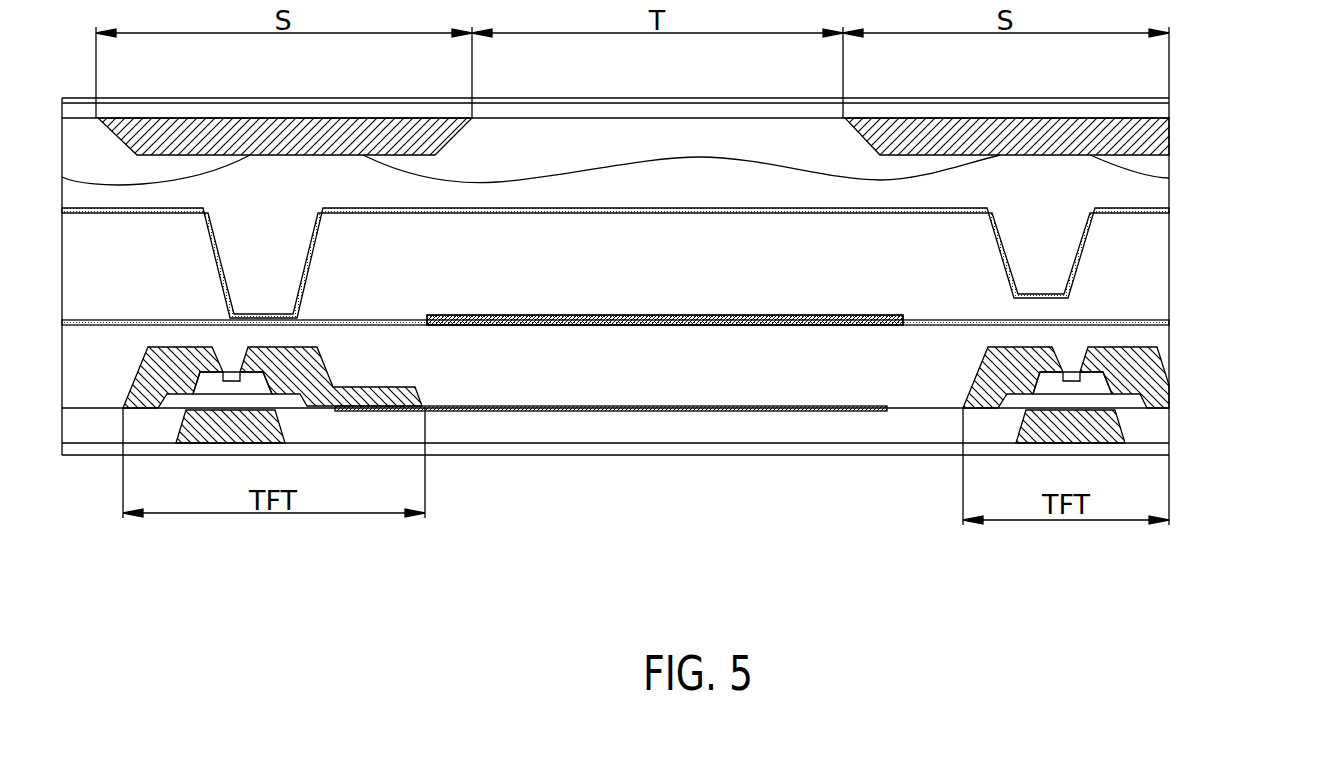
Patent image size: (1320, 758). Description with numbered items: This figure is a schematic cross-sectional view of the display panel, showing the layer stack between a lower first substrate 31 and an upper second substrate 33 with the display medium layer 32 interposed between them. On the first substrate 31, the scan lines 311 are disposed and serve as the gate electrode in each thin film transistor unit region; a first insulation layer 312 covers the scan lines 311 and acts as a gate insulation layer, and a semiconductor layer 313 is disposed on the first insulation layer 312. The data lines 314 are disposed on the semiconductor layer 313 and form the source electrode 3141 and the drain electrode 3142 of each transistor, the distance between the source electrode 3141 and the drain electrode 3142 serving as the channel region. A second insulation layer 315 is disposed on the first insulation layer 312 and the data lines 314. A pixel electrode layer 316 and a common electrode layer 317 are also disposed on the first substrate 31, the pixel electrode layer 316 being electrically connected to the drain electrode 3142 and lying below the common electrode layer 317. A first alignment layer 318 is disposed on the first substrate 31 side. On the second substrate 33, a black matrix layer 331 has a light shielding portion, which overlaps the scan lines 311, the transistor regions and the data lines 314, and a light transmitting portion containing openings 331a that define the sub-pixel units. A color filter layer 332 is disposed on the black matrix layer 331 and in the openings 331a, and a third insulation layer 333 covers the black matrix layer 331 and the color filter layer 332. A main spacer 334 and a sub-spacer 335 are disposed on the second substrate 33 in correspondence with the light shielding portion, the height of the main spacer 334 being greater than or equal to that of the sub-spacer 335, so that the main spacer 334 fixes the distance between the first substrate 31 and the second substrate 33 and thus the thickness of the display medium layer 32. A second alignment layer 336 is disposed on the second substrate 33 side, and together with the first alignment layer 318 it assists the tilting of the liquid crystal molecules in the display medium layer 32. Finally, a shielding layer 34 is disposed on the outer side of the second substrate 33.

The first substrate 31 is at (1150, 462).
The scan line 311 is at (1108, 430).
The first insulation layer 312 is at (1155, 423).
The semiconductor layer 313 is at (1097, 383).
The data line 314 is at (1254, 338).
The source electrode 3141 is at (1030, 350).
The drain electrode 3142 is at (1143, 367).
The second insulation layer 315 is at (1169, 328).
The pixel electrode layer 316 is at (730, 411).
The common electrode layer 317 is at (850, 326).
The first alignment layer 318 is at (1152, 322).
The display medium layer 32 is at (1145, 260).
The second substrate 33 is at (1169, 112).
The black matrix layer 331 is at (1160, 137).
The opening 331a is at (533, 133).
The color filter layer 332 is at (1160, 167).
The third insulation layer 333 is at (1160, 196).
The main spacer 334 is at (190, 360).
The sub-spacer 335 is at (1070, 238).
The second alignment layer 336 is at (1163, 211).
The shielding layer 34 is at (1169, 100).